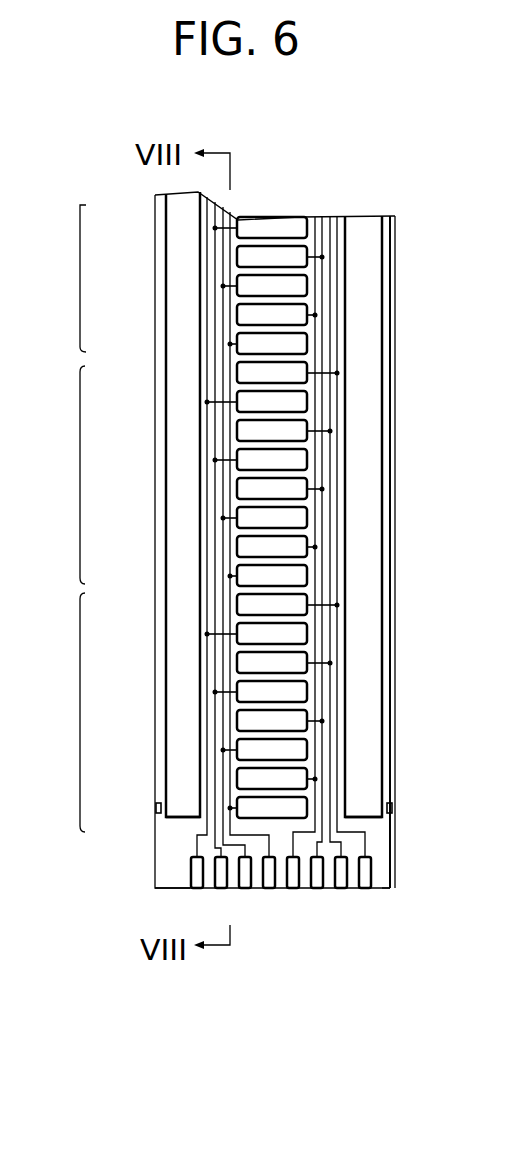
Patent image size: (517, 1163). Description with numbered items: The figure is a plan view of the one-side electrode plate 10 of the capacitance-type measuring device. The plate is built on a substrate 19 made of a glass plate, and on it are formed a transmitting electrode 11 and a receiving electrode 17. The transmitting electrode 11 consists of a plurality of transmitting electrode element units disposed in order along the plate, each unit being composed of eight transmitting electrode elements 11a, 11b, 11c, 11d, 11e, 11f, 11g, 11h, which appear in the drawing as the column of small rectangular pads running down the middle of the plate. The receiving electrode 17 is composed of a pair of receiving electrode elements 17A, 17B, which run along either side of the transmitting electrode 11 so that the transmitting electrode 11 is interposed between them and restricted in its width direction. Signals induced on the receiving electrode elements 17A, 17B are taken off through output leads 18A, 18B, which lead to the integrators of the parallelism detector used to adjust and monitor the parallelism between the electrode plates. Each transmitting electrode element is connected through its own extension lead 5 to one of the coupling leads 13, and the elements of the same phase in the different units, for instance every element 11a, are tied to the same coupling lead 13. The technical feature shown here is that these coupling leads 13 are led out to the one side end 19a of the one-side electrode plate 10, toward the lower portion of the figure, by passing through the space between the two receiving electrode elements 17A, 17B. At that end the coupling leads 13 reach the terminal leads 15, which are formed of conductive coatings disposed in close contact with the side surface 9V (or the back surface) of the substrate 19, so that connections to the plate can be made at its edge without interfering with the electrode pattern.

The one-side electrode plate 10 is at (428, 240).
The transmitting electrode 11 is at (73, 625).
The transmitting electrode element 11a is at (247, 342).
The transmitting electrode element 11b is at (247, 313).
The transmitting electrode element 11c is at (247, 748).
The transmitting electrode element 11d is at (247, 719).
The transmitting electrode element 11e is at (247, 690).
The transmitting electrode element 11f is at (247, 661).
The transmitting electrode element 11g is at (247, 632).
The transmitting electrode element 11h is at (247, 371).
The extension lead 5 is at (313, 381).
The coupling lead 13 is at (330, 408).
The substrate 19 is at (386, 511).
The one side end 19a is at (381, 868).
The output lead 18A is at (157, 816).
The output lead 18B is at (393, 809).
The receiving electrode 17 is at (432, 886).
The receiving electrode element 17A is at (187, 820).
The receiving electrode element 17B is at (373, 820).
The side surface 9V is at (172, 888).
The terminal lead 15 is at (313, 890).